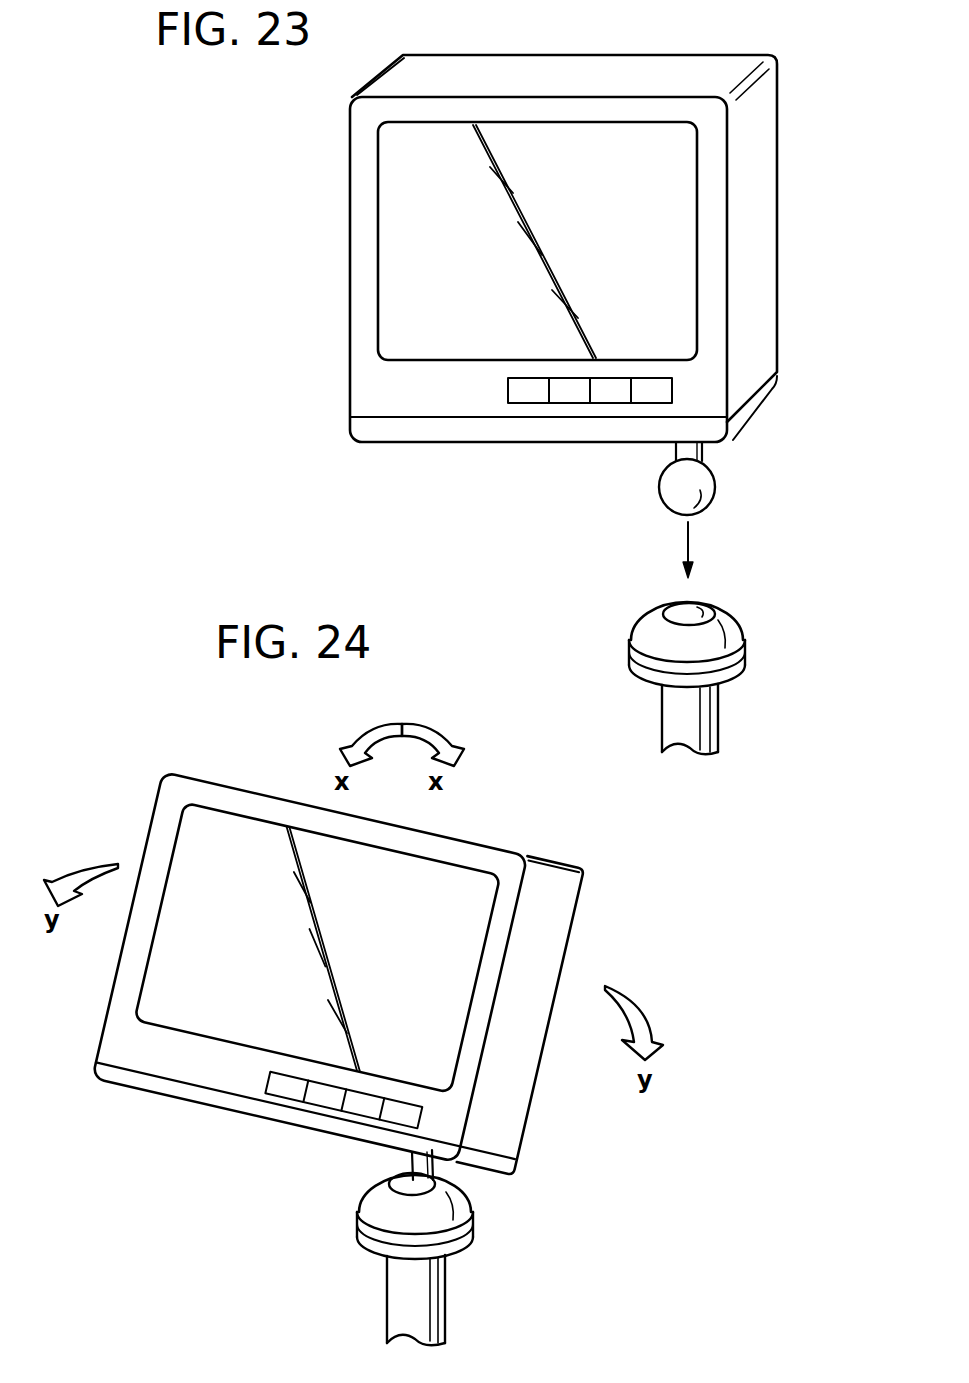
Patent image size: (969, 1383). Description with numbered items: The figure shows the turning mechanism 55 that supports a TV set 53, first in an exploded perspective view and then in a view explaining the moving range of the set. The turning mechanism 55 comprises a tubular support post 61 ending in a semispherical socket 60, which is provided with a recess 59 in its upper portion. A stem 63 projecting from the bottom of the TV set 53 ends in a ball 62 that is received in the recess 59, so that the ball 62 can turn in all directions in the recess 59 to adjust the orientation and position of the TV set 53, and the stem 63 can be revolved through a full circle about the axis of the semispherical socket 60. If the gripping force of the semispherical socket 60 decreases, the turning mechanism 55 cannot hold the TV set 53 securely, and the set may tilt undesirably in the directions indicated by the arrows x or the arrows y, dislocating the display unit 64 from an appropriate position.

In FIG. 23, the TV set 53 is at (778, 313).
In FIG. 24, the TV set 53 is at (237, 783).
In FIG. 23, the display unit 64 is at (484, 328).
In FIG. 24, the display unit 64 is at (213, 1017).
In FIG. 23, the stem 63 is at (676, 448).
In FIG. 24, the stem 63 is at (400, 1167).
In FIG. 23, the ball 62 is at (716, 500).
In FIG. 23, the turning mechanism 55 is at (690, 653).
In FIG. 23, the recess 59 is at (710, 607).
In FIG. 23, the semispherical socket 60 is at (733, 618).
In FIG. 23, the tubular support post 61 is at (718, 712).
In FIG. 24, the tubular support post 61 is at (445, 1300).